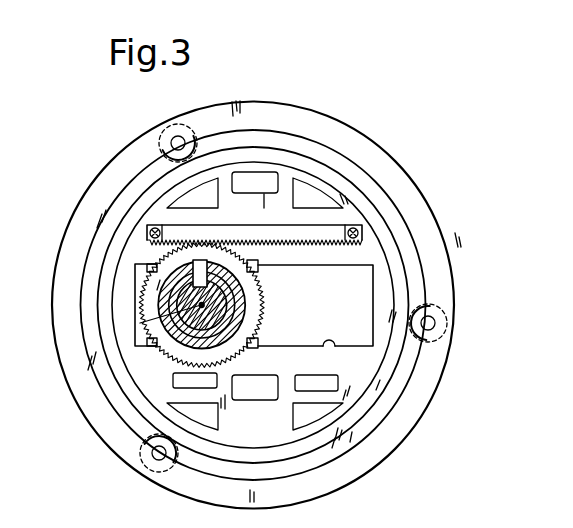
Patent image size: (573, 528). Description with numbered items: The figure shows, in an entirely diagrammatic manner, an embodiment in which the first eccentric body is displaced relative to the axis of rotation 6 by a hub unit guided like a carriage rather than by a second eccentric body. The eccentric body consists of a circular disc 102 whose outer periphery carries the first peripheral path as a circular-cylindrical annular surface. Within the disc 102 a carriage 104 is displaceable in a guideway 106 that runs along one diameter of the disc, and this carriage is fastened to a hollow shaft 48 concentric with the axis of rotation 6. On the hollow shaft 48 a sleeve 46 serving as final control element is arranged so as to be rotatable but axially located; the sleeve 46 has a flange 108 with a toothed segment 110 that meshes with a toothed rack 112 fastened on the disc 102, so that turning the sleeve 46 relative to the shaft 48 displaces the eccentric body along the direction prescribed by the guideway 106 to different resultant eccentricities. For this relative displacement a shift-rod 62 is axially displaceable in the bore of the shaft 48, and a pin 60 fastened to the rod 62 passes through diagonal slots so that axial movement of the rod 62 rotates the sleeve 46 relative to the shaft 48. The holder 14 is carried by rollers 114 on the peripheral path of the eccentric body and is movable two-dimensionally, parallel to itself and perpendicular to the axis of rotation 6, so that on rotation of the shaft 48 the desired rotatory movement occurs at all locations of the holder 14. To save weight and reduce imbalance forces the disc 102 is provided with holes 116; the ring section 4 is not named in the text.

The ring 4 is at (388, 390).
The axis of rotation 6 is at (257, 330).
The holder 14 is at (455, 296).
The sleeve 46 is at (240, 338).
The hollow shaft 48 is at (240, 322).
The pin 60 is at (200, 262).
The shift-rod 62 is at (146, 323).
The circular disc 102 is at (385, 282).
The carriage 104 is at (150, 262).
The guideway 106 is at (330, 347).
The flange 108 is at (248, 283).
The toothed segment 110 is at (255, 308).
The toothed rack 112 is at (352, 230).
The rollers 114 is at (423, 352).
The holes 116 is at (315, 418).